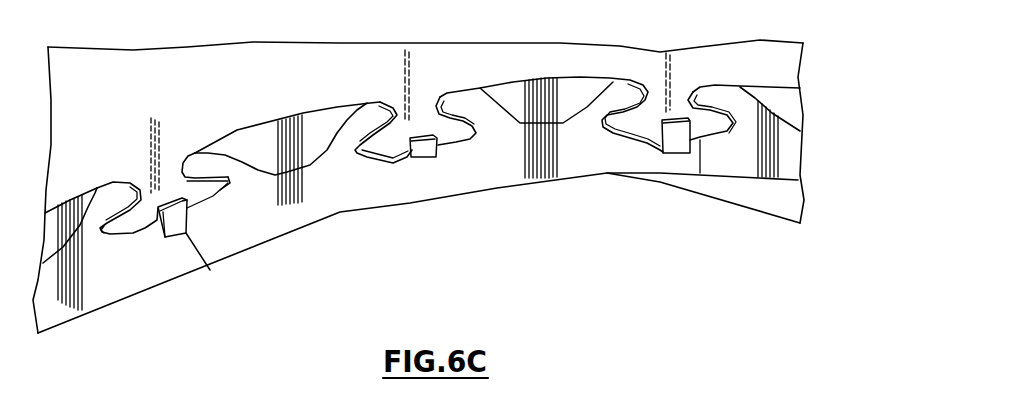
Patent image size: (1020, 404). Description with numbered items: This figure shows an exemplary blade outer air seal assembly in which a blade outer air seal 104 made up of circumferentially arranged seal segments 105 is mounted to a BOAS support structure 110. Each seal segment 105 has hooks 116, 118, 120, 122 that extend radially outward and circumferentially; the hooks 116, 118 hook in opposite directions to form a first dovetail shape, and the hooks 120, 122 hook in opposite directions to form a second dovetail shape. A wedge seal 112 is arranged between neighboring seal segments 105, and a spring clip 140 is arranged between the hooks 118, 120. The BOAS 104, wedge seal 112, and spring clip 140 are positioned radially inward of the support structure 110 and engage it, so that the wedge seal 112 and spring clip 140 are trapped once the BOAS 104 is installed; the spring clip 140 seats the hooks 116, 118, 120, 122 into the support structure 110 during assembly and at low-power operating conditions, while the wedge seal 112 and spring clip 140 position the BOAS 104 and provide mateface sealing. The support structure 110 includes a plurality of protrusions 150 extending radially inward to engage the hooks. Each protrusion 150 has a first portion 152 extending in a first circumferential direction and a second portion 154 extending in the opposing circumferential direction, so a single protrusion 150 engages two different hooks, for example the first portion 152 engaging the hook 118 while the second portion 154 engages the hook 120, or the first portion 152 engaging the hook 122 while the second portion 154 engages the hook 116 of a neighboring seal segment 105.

The blade outer air seal 104 is at (108, 270).
The seal segment 105 is at (172, 270).
The BOAS support structure 110 is at (408, 54).
The wedge seal 112 is at (197, 250).
The hook 116 is at (195, 153).
The hook 118 is at (353, 122).
The hook 120 is at (464, 107).
The hook 122 is at (623, 82).
The spring clip 140 is at (422, 157).
The protrusion 150 is at (130, 220).
The first portion 152 is at (110, 235).
The second portion 154 is at (220, 190).